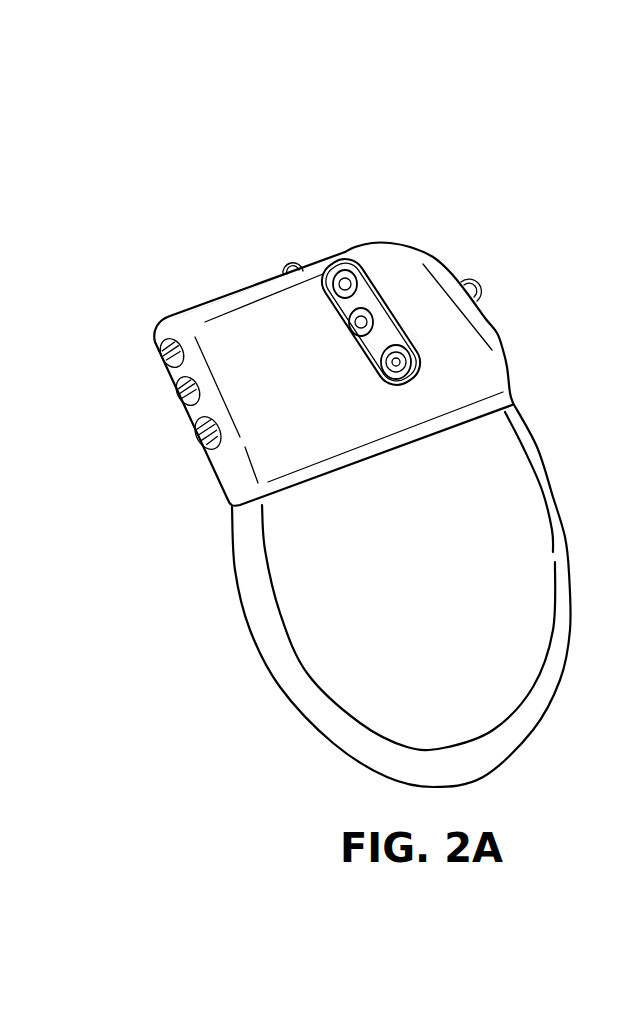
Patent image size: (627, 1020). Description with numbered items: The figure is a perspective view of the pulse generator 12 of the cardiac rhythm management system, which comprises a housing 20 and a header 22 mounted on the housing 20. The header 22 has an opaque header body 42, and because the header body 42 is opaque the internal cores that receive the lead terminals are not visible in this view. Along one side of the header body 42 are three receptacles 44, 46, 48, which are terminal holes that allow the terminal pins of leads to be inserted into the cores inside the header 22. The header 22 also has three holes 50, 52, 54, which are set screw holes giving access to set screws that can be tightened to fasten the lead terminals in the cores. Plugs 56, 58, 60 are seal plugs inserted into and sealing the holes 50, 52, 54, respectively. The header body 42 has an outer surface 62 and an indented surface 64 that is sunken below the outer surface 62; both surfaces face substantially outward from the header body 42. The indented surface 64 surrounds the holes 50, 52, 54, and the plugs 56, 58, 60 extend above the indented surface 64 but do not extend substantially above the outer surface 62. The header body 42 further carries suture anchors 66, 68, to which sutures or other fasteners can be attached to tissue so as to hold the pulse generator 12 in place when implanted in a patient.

The pulse generator 12 is at (162, 190).
The housing 20 is at (282, 688).
The header 22 is at (268, 283).
The header body 42 is at (450, 318).
The receptacle 44 is at (205, 445).
The receptacle 46 is at (180, 393).
The receptacle 48 is at (168, 350).
The hole 50 is at (380, 377).
The hole 52 is at (390, 333).
The hole 54 is at (327, 297).
The plug 56 is at (399, 365).
The plug 58 is at (362, 318).
The plug 60 is at (345, 283).
The outer surface 62 is at (243, 325).
The indented surface 64 is at (417, 340).
The suture anchor 66 is at (472, 282).
The suture anchor 68 is at (293, 264).